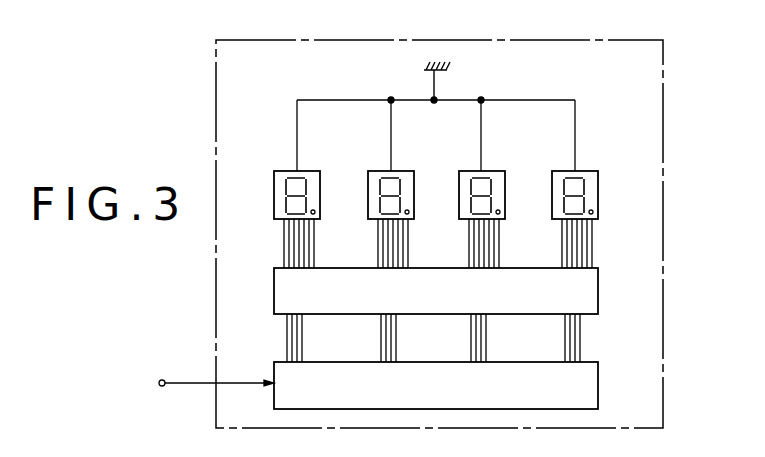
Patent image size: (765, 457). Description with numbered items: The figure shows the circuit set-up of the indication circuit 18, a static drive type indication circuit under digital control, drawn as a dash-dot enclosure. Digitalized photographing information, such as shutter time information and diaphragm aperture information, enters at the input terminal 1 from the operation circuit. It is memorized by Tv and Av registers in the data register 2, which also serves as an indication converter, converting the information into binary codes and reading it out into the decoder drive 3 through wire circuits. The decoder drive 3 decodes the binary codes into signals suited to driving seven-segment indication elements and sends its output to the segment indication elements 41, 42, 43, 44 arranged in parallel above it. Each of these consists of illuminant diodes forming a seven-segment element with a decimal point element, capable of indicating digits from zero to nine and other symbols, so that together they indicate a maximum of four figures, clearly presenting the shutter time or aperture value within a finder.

The indication circuit 18 is at (555, 40).
The segment indication element 41 is at (310, 171).
The segment indication element 42 is at (404, 171).
The segment indication element 43 is at (495, 171).
The segment indication element 44 is at (585, 171).
The decoder drive 3 is at (598, 292).
The data register 2 is at (598, 385).
The input terminal 1 is at (162, 380).